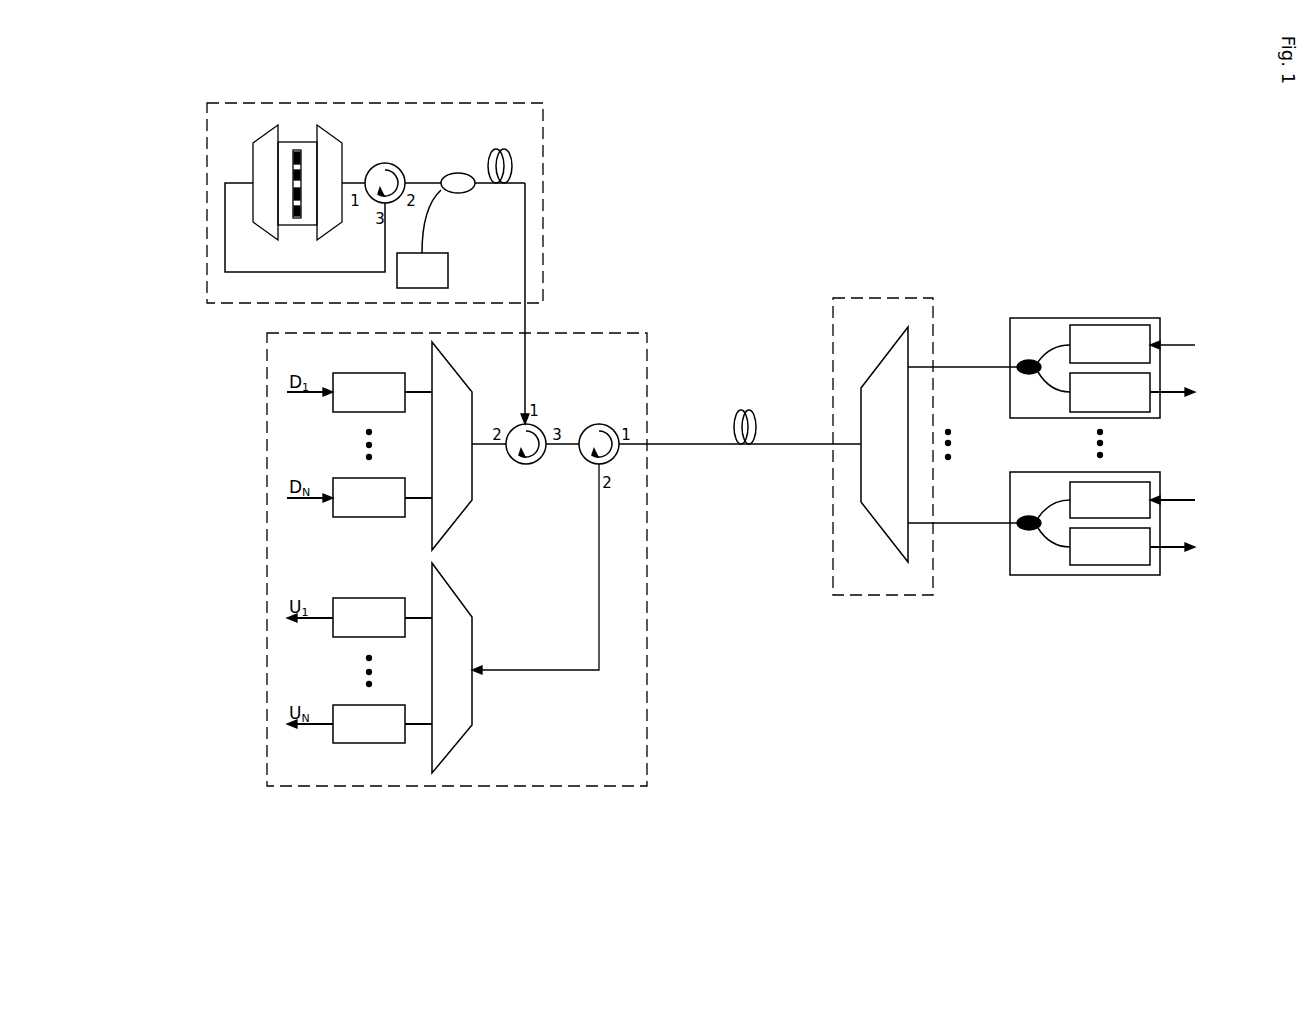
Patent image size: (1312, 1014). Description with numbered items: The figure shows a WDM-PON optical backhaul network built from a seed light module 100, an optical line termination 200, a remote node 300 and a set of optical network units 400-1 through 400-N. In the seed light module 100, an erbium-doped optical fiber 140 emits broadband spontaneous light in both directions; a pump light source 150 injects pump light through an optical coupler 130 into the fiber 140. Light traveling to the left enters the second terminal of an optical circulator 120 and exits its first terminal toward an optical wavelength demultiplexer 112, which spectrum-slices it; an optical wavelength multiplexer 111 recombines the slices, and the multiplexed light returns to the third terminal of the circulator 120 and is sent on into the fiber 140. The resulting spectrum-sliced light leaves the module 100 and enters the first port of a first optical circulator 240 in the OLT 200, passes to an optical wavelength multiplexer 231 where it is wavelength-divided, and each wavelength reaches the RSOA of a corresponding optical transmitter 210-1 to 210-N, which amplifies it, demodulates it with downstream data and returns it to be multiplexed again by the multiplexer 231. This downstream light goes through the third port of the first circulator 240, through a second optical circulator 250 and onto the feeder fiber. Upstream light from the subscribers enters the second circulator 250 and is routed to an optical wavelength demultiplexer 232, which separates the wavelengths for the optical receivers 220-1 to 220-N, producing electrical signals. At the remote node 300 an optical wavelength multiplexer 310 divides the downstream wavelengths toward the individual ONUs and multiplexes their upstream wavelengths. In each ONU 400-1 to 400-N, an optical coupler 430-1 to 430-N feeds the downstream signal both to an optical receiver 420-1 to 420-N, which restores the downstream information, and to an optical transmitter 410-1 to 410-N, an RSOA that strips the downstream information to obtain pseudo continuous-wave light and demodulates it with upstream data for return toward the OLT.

The seed light module 100 is at (427, 103).
The optical wavelength multiplexer 111 is at (262, 140).
The optical wavelength demultiplexer 112 is at (330, 137).
The optical circulator 120 is at (392, 163).
The optical coupler 130 is at (458, 173).
The erbium-doped optical fiber 140 is at (502, 149).
The pump light source 150 is at (448, 268).
The optical line termination 200 is at (267, 558).
The optical transmitter 210-1 is at (355, 373).
The optical transmitter 210-N is at (355, 478).
The optical receiver 220-1 is at (355, 598).
The optical receiver 220-N is at (355, 705).
The optical wavelength multiplexer 231 is at (463, 380).
The optical wavelength demultiplexer 232 is at (463, 603).
The first optical circulator 240 is at (527, 464).
The second optical circulator 250 is at (596, 423).
The remote node 300 is at (903, 298).
The optical wavelength multiplexer 310 is at (872, 373).
The optical network unit 400-1 is at (1027, 318).
The optical network unit 400-N is at (1030, 472).
The optical transmitter 410-1 is at (1118, 325).
The optical transmitter 410-N is at (1152, 485).
The optical receiver 420-1 is at (1150, 405).
The optical receiver 420-N is at (1150, 560).
The optical coupler 430-1 is at (1020, 358).
The optical coupler 430-N is at (1020, 515).